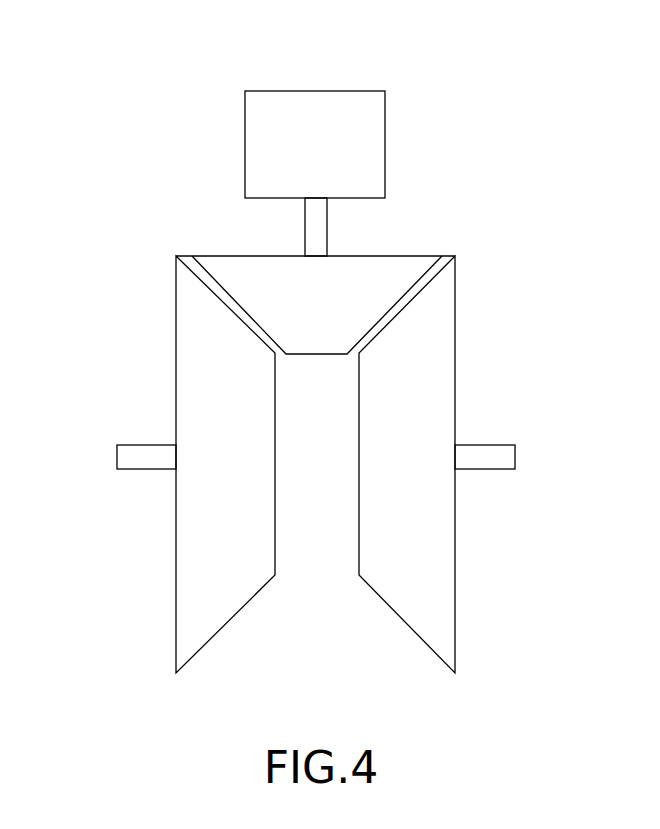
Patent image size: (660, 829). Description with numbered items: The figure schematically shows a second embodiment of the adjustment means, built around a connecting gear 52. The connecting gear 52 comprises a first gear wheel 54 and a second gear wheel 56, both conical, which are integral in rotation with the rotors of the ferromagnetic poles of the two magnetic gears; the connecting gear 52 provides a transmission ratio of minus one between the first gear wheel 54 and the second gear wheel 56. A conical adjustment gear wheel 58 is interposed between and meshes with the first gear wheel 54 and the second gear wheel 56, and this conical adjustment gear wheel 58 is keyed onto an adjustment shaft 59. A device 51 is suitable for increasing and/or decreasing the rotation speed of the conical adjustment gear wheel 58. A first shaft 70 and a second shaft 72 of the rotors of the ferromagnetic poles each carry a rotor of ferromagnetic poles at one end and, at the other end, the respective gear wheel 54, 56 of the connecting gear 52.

The device 51 is at (300, 155).
The connecting gear 52 is at (583, 258).
The first gear wheel 54 is at (190, 353).
The second gear wheel 56 is at (437, 350).
The conical adjustment gear wheel 58 is at (232, 273).
The adjustment shaft 59 is at (328, 232).
The first shaft of the rotor of the ferromagnetic poles 70 is at (143, 462).
The second shaft of the rotor of the ferromagnetic poles 72 is at (493, 457).